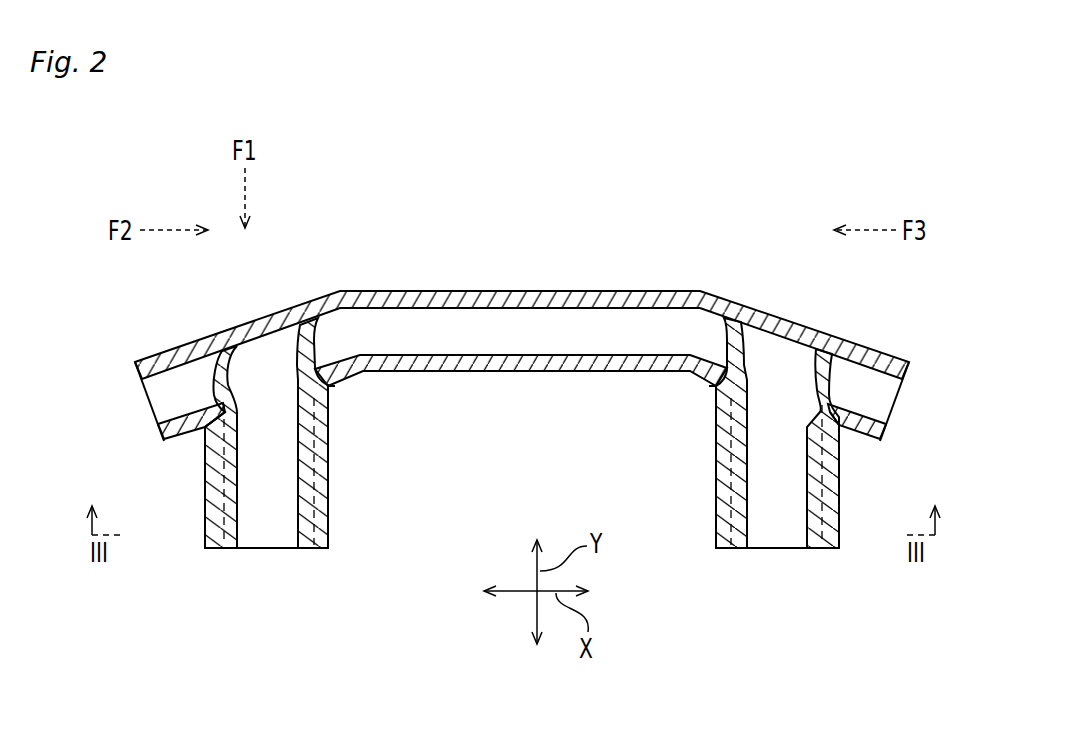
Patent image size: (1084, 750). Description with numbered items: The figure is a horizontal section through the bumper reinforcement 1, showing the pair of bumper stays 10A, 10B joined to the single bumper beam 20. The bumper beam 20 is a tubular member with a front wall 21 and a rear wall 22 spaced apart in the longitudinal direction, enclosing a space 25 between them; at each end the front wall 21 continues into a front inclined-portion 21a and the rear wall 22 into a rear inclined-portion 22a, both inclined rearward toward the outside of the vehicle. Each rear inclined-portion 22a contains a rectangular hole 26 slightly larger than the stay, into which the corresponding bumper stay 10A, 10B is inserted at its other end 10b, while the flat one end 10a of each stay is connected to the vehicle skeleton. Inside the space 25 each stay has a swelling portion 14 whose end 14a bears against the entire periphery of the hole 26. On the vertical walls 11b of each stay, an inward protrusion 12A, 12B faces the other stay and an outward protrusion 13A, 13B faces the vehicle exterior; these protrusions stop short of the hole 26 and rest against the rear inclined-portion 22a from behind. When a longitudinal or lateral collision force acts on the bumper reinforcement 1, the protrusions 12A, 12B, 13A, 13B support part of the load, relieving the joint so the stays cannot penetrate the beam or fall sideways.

The bumper reinforcement 1 is at (700, 196).
The bumper beam 20 is at (457, 287).
The front wall 21 is at (560, 290).
The front inclined-portion 21a is at (135, 360).
The rear wall 22 is at (549, 373).
The rear inclined-portion 22a is at (168, 434).
The space 25 is at (500, 332).
The hole 26 is at (215, 440).
The swelling portion 14 is at (338, 291).
The end of swelling portion 14a is at (304, 380).
The bumper stay 10A is at (336, 483).
The bumper stay 10B is at (710, 483).
The one end of bumper stay 10a is at (262, 553).
The other end of bumper stay 10b is at (248, 334).
The vertical wall 11b is at (228, 552).
The inward protrusion 12A is at (330, 450).
The inward protrusion 12B is at (716, 450).
The outward protrusion 13A is at (213, 482).
The outward protrusion 13B is at (840, 496).